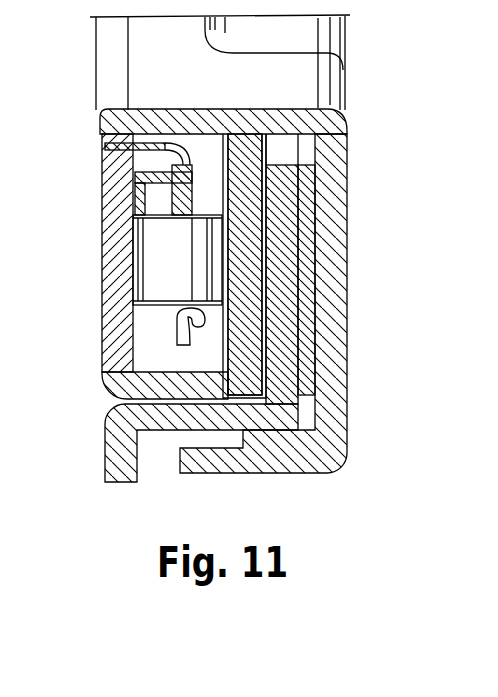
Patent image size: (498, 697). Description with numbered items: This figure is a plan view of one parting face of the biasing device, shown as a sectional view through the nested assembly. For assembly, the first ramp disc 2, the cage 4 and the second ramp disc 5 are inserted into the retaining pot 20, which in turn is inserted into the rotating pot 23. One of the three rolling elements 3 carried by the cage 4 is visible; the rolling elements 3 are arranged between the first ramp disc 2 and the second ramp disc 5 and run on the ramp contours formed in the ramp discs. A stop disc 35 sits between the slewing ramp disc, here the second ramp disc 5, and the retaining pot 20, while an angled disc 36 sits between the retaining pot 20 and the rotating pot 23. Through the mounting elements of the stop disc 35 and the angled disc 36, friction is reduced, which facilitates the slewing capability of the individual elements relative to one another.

The first ramp disc 2 is at (125, 178).
The rolling elements 3 is at (148, 260).
The cage 4 is at (177, 325).
The second ramp disc 5 is at (260, 370).
The retaining pot 20 is at (120, 462).
The rotating pot 23 is at (330, 410).
The stop disc 35 is at (262, 251).
The angled disc 36 is at (300, 302).